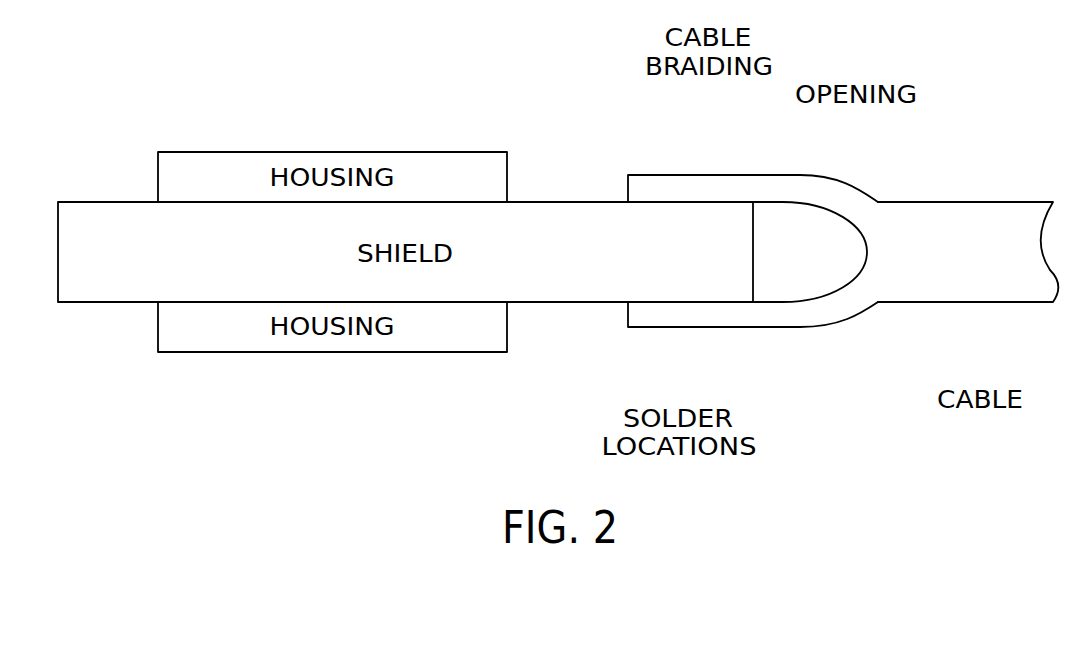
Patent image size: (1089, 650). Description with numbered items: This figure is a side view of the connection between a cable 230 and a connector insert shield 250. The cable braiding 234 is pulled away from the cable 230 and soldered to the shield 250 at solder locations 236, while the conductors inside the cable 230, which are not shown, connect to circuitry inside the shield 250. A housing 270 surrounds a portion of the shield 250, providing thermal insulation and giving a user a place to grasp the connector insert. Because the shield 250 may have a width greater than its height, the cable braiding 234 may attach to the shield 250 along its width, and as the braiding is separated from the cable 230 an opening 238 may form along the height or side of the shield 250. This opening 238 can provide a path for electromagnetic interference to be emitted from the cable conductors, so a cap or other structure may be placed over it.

The connector insert shield 250 is at (112, 202).
The housing 270 is at (340, 152).
The cable braiding 234 is at (725, 175).
The opening 238 is at (822, 242).
The solder locations 236 is at (648, 202).
The cable 230 is at (958, 302).